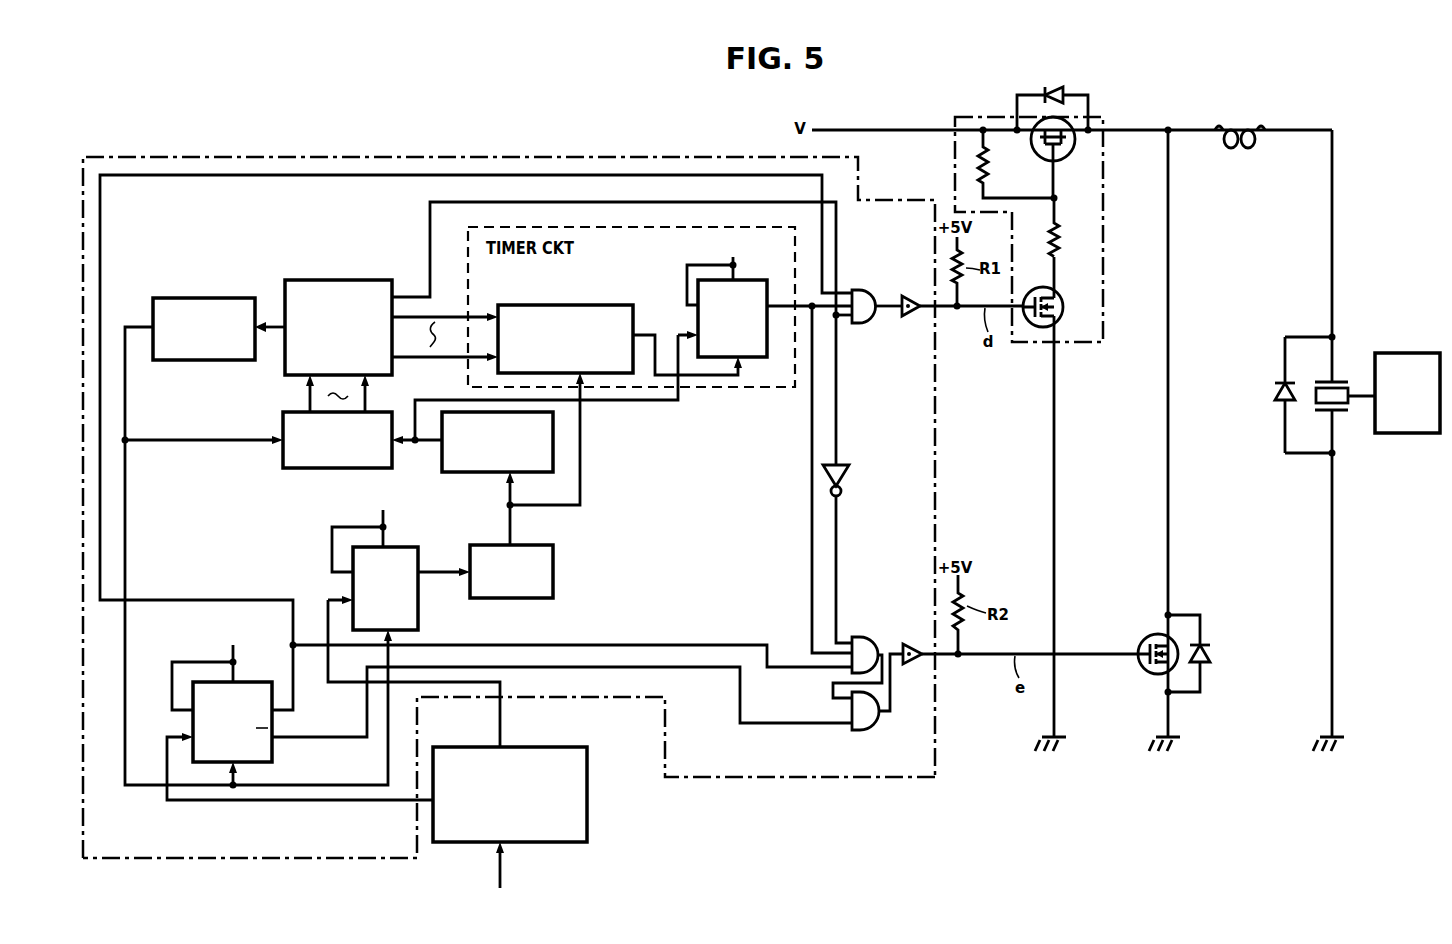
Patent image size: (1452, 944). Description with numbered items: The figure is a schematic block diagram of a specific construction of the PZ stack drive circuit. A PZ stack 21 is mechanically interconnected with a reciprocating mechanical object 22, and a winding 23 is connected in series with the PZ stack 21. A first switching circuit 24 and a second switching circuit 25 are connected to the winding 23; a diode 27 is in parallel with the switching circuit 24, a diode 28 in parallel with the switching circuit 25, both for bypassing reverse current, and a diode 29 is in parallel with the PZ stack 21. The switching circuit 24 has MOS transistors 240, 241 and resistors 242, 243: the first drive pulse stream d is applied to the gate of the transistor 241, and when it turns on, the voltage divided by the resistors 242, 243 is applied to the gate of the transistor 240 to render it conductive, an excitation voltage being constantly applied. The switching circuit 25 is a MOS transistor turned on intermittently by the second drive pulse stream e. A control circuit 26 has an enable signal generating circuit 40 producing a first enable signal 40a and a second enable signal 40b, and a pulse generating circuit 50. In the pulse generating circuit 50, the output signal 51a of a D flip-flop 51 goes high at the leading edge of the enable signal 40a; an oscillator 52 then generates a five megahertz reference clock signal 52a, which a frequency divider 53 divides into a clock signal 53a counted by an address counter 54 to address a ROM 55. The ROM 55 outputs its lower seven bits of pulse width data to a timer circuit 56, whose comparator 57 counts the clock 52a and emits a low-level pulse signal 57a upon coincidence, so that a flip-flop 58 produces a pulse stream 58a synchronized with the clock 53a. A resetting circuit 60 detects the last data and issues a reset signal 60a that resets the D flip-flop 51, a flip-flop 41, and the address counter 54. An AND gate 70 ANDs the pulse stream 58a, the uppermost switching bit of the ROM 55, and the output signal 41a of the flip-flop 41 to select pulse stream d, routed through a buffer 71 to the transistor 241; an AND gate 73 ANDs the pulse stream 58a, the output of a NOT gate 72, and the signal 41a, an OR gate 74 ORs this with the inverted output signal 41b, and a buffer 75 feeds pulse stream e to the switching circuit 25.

The pulse generating circuit 50 is at (297, 157).
The control circuit 26 is at (629, 757).
The resetting circuit 60 is at (216, 298).
The reset signal 60a is at (126, 326).
The ROM 55 is at (360, 280).
The timer circuit 56 is at (614, 333).
The comparator 57 is at (595, 305).
The pulse signal 57a is at (652, 330).
The flip-flop 58 is at (757, 280).
The pulse stream 58a is at (778, 308).
The address counter 54 is at (284, 418).
The frequency divider 53 is at (456, 474).
The clock signal 53a is at (421, 445).
The oscillator 52 is at (555, 565).
The reference clock signal 52a is at (512, 522).
The D flip-flop 51 is at (420, 615).
The output signal 51a is at (433, 568).
The flip-flop 41 is at (255, 682).
The output signal 41a is at (221, 600).
The inverted output signal 41b is at (704, 669).
The enable signal generating circuit 40 is at (548, 843).
The first enable signal 40a is at (503, 718).
The second enable signal 40b is at (322, 802).
The AND gate 70 is at (858, 291).
The buffer 71 is at (909, 296).
The NOT gate 72 is at (853, 554).
The AND gate 73 is at (862, 638).
The OR gate 74 is at (869, 727).
The buffer 75 is at (912, 644).
The first switching circuit 24 is at (970, 116).
The diode 27 is at (1060, 86).
The MOS transistor 240 is at (1074, 151).
The resistor 242 is at (974, 157).
The resistor 243 is at (1065, 241).
The MOS transistor 241 is at (1065, 315).
The winding 23 is at (1242, 122).
The reciprocating mechanical object 22 is at (1400, 353).
The PZ stack 21 is at (1340, 381).
The diode 29 is at (1272, 393).
The second switching circuit 25 is at (1145, 636).
The diode 28 is at (1211, 652).